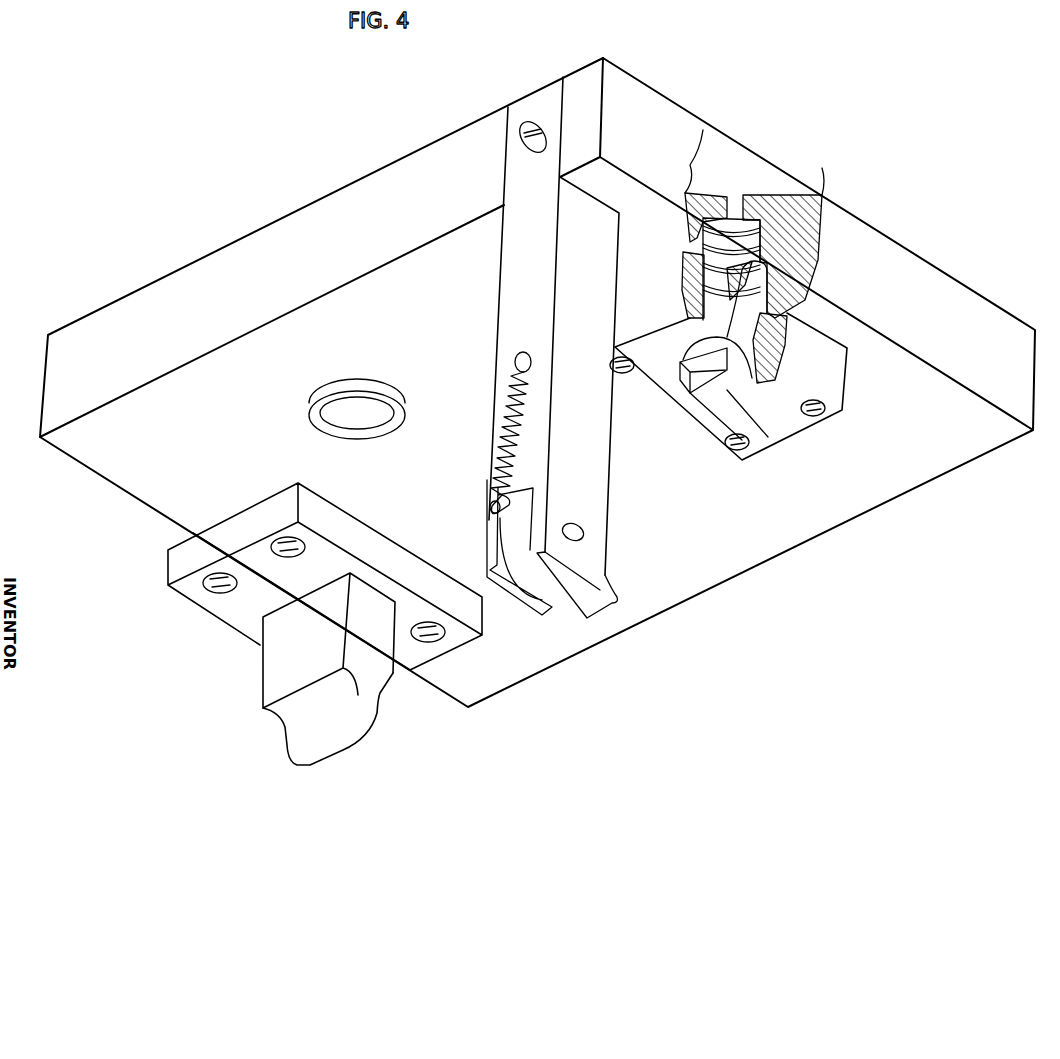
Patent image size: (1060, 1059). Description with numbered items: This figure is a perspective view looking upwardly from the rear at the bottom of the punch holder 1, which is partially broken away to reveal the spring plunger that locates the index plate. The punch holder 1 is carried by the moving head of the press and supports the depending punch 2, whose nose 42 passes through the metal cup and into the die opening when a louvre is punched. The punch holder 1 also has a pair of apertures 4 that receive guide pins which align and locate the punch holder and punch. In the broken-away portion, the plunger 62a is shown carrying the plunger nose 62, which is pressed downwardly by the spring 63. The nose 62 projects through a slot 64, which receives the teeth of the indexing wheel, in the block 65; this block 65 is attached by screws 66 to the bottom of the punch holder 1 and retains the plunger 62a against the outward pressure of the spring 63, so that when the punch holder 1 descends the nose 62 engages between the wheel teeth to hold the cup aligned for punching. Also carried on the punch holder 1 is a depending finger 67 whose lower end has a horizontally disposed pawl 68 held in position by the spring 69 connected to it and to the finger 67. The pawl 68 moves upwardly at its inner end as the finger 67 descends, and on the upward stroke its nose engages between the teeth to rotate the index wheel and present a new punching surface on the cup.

The punch holder 1 is at (372, 188).
The punch 2 is at (325, 628).
The apertures 4 is at (367, 405).
The nose of the punch 42 is at (334, 745).
The plunger nose 62 is at (708, 388).
The plunger 62a is at (757, 288).
The spring 63 is at (748, 220).
The slot 64 is at (778, 425).
The block 65 is at (832, 375).
The screws 66 is at (626, 380).
The depending finger 67 is at (512, 332).
The pawl 68 is at (600, 613).
The spring 69 is at (492, 447).